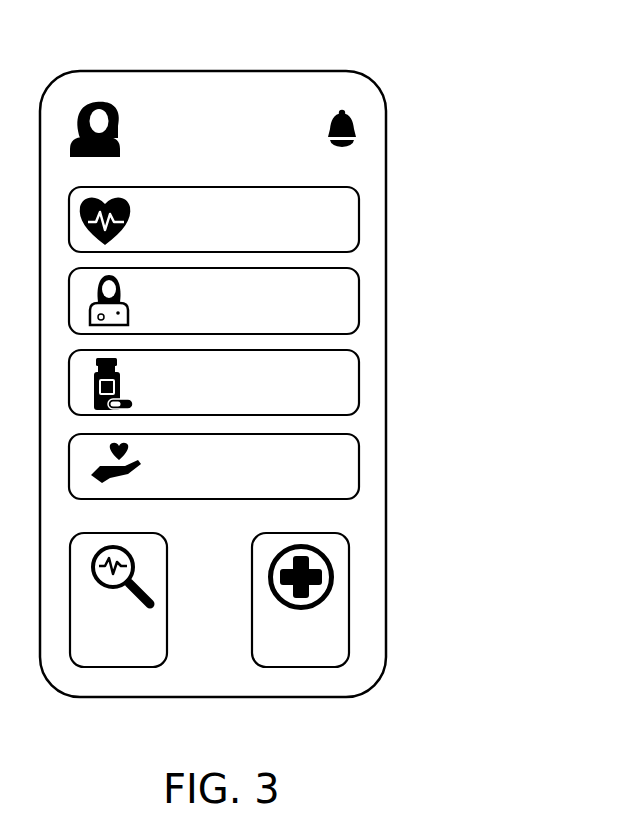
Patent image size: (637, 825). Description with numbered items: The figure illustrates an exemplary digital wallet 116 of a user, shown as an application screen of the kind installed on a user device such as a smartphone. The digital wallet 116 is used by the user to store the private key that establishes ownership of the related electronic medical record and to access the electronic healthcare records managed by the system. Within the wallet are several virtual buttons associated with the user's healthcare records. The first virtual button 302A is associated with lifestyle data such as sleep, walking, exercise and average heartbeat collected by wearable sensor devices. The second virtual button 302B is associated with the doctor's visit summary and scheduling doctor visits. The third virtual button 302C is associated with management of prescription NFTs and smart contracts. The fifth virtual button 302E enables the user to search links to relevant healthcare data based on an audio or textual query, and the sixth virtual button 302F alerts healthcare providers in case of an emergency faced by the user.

The digital wallet 116 is at (432, 58).
The first virtual button 302A is at (188, 233).
The second virtual button 302B is at (188, 314).
The third virtual button 302C is at (188, 395).
The fifth virtual button 302E is at (188, 478).
The sixth virtual button 302F is at (326, 656).